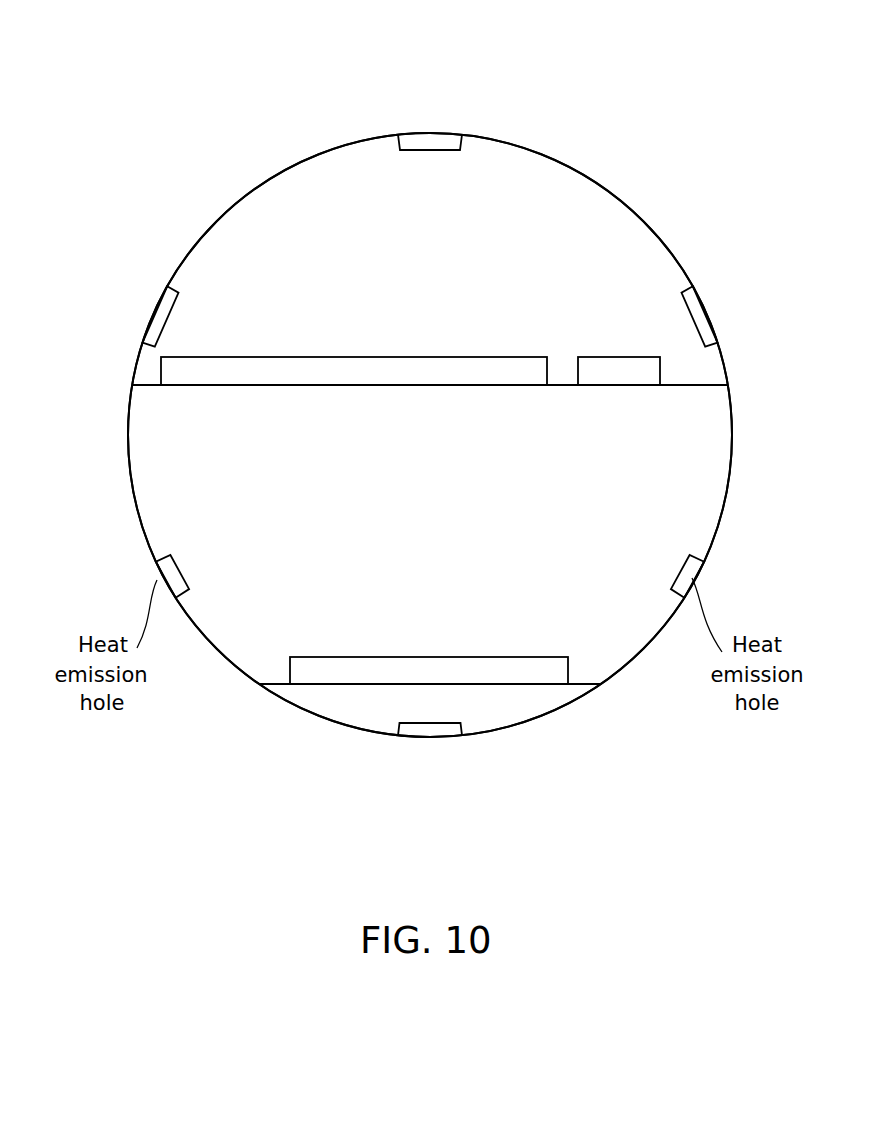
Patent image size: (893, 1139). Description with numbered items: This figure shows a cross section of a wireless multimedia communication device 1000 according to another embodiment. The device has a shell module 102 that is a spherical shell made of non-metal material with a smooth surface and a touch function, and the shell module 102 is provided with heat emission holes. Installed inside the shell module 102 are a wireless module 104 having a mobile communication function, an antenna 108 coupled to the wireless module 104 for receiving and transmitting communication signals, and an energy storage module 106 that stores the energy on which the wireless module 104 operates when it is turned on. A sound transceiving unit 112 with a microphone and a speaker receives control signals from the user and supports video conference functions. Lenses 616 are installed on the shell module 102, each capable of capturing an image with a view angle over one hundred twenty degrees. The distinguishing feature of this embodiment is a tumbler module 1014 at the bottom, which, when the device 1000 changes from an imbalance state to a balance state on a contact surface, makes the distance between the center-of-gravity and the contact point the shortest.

The wireless multimedia communication device 1000 is at (626, 68).
The shell module 102 is at (363, 136).
The wireless module 104 is at (338, 368).
The energy storage module 106 is at (420, 668).
The antenna 108 is at (622, 368).
The sound transceiving unit 112 is at (432, 143).
The lens 616 is at (161, 318).
The tumbler module 1014 is at (432, 728).